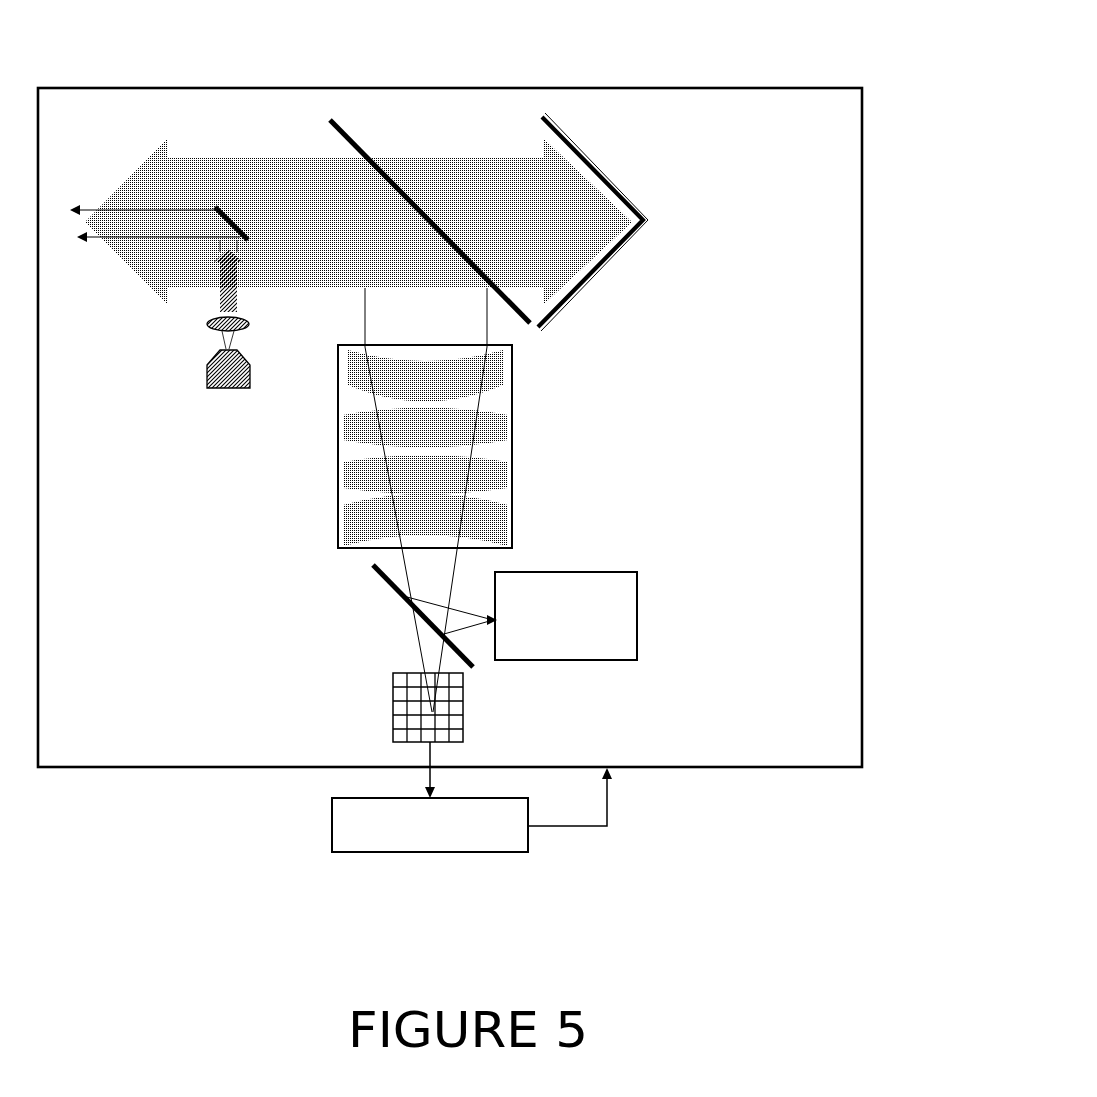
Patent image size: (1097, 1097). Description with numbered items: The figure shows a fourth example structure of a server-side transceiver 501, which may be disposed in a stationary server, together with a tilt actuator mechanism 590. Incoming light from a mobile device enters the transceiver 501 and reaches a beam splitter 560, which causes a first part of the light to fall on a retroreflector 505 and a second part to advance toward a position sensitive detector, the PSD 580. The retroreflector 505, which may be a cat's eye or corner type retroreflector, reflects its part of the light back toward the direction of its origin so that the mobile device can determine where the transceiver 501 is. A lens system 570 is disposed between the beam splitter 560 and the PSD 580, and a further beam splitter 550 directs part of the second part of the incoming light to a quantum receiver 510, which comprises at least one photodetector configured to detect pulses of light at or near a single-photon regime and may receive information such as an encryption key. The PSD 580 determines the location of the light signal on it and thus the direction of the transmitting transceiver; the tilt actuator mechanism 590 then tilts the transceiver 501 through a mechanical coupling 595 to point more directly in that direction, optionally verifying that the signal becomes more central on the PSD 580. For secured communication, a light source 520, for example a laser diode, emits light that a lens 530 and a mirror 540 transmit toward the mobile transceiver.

The transceiver 501 is at (747, 88).
The retroreflector 505 is at (618, 190).
The quantum receiver 510 is at (566, 616).
The light source 520 is at (237, 389).
The lens 530 is at (208, 325).
The mirror 540 is at (228, 196).
The beam splitter 550 is at (383, 578).
The beam splitter 560 is at (357, 141).
The lens system 570 is at (513, 445).
The PSD 580 is at (463, 722).
The tilt actuator mechanism 590 is at (430, 825).
The mechanical coupling 595 is at (599, 827).